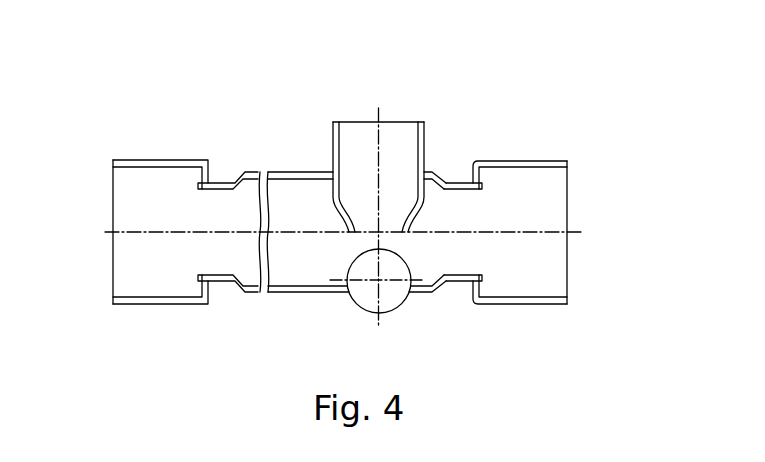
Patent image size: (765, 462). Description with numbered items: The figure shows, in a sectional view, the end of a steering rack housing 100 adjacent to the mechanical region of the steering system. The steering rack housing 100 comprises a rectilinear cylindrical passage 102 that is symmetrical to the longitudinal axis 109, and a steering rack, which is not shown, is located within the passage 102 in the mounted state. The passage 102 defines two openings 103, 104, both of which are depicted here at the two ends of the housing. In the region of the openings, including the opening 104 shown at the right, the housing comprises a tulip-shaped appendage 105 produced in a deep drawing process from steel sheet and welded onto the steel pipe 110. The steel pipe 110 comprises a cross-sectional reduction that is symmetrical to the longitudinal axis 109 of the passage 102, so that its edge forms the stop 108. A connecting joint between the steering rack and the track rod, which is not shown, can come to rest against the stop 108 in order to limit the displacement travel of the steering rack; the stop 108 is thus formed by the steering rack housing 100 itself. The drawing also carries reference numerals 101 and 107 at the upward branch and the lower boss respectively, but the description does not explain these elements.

The steering rack housing 100 is at (330, 89).
The branch port 101 is at (418, 122).
The cylindrical passage 102 is at (435, 207).
The opening 103 is at (112, 192).
The opening 104 is at (568, 182).
The tulip-shaped appendage 105 is at (553, 161).
The boss 107 is at (352, 303).
The stop 108 is at (482, 177).
The longitudinal axis 109 is at (365, 232).
The steel pipe 110 is at (435, 297).